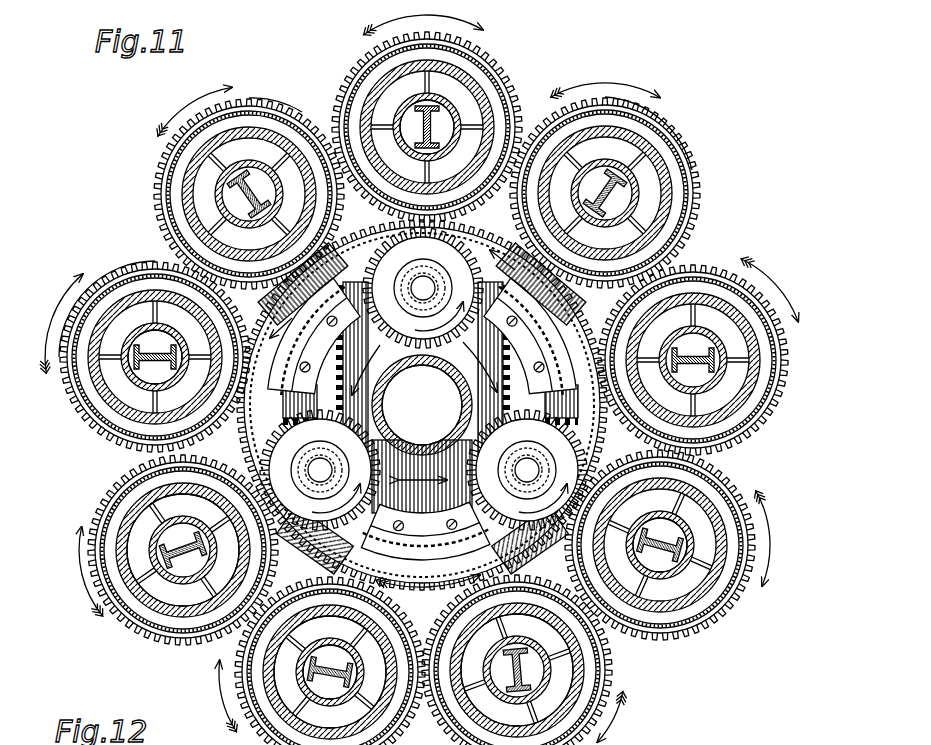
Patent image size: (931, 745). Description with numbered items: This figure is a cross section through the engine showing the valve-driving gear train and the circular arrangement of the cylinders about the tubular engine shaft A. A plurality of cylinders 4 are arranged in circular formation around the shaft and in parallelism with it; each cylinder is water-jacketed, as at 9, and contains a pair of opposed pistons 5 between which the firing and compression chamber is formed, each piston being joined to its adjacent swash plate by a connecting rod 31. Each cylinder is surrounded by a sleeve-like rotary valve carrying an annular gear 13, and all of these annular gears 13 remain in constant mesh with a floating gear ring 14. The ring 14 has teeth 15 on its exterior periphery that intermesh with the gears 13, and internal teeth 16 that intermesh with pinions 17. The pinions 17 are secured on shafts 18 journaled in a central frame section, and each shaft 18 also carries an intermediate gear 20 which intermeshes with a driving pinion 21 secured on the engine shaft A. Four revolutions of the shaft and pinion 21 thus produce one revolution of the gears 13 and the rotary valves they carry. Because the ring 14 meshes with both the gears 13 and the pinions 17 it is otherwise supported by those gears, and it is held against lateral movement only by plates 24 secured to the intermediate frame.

The cylinder 4 is at (500, 97).
The opposed piston 5 is at (150, 518).
The water jacket 9 is at (178, 168).
The annular gear 13 is at (688, 141).
The floating gear ring 14 is at (328, 268).
The teeth 15 is at (566, 298).
The internal teeth 16 is at (290, 410).
The pinion 17 is at (552, 505).
The shaft 18 is at (423, 379).
The intermediate gear 20 is at (425, 380).
The driving pinion 21 is at (452, 372).
The plate 24 is at (545, 333).
The connecting rod 31 is at (407, 399).
The tubular engine shaft A is at (422, 405).